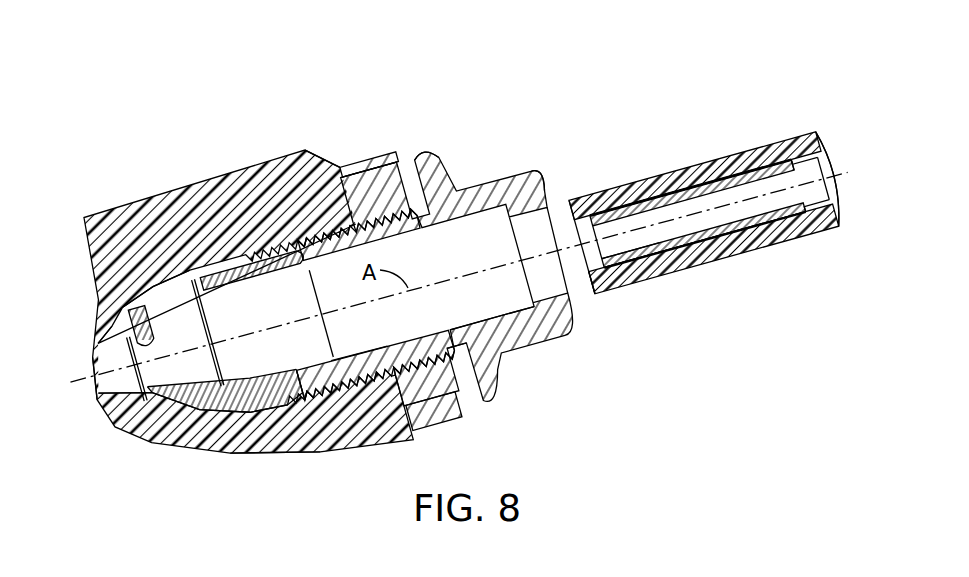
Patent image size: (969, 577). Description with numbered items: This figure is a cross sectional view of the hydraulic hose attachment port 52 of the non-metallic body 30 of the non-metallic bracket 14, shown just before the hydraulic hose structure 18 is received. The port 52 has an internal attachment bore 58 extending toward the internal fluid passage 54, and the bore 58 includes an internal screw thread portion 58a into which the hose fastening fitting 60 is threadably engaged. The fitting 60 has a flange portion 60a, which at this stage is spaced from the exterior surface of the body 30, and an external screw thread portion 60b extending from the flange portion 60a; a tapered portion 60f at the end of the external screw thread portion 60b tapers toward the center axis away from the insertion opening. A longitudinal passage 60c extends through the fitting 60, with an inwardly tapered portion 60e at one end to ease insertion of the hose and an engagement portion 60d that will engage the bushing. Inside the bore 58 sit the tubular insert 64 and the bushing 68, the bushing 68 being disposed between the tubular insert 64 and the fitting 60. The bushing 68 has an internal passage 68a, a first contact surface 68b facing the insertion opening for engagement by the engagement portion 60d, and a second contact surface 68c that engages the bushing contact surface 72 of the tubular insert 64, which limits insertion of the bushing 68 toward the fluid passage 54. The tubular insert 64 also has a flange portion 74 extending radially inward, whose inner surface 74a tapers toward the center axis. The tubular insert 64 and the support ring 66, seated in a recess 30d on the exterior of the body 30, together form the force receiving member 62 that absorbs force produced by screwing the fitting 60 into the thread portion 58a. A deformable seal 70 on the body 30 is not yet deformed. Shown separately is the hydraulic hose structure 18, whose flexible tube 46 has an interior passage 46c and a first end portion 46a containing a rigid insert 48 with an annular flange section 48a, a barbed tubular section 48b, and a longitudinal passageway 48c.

The non-metallic bracket 14 is at (202, 457).
The hydraulic hose structure 18 is at (725, 150).
The non-metallic body 30 is at (140, 201).
The recess 30d is at (413, 410).
The flexible tube 46 is at (741, 255).
The first end portion 46a is at (632, 288).
The interior passage 46c is at (810, 200).
The rigid insert 48 is at (625, 196).
The annular flange section 48a is at (598, 282).
The tubular section 48b is at (667, 190).
The longitudinal passageway 48c is at (797, 165).
The hydraulic hose attachment port 52 is at (380, 383).
The internal fluid passage 54 is at (93, 387).
The internal attachment bore 58 is at (212, 285).
The internal screw thread portion 58a is at (345, 168).
The hose fastening fitting 60 is at (483, 175).
The flange portion 60a is at (430, 152).
The external screw thread portion 60b is at (350, 180).
The longitudinal passage 60c is at (430, 320).
The engagement portion 60d is at (318, 395).
The inwardly tapered portion 60e is at (547, 205).
The tapered portion 60f is at (372, 385).
The force receiving member 62 is at (238, 408).
The tubular insert 64 is at (123, 305).
The support ring 66 is at (387, 148).
The bushing 68 is at (250, 265).
The internal passage 68a is at (293, 370).
The first contact surface 68b is at (290, 253).
The second contact surface 68c is at (280, 407).
The deformable seal 70 is at (147, 403).
The bushing contact surface 72 is at (207, 293).
The flange portion 74 is at (137, 362).
The inner surface 74a is at (203, 358).